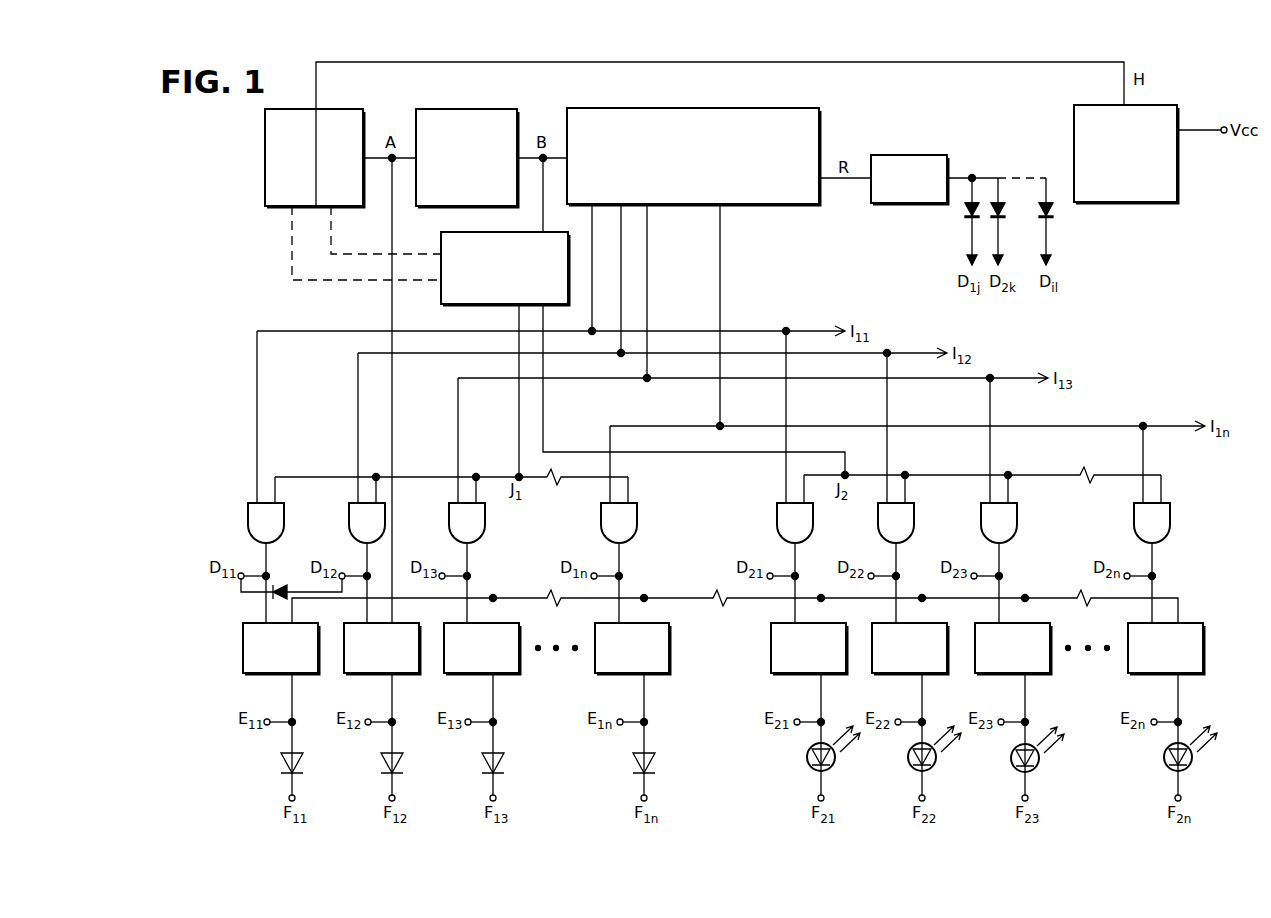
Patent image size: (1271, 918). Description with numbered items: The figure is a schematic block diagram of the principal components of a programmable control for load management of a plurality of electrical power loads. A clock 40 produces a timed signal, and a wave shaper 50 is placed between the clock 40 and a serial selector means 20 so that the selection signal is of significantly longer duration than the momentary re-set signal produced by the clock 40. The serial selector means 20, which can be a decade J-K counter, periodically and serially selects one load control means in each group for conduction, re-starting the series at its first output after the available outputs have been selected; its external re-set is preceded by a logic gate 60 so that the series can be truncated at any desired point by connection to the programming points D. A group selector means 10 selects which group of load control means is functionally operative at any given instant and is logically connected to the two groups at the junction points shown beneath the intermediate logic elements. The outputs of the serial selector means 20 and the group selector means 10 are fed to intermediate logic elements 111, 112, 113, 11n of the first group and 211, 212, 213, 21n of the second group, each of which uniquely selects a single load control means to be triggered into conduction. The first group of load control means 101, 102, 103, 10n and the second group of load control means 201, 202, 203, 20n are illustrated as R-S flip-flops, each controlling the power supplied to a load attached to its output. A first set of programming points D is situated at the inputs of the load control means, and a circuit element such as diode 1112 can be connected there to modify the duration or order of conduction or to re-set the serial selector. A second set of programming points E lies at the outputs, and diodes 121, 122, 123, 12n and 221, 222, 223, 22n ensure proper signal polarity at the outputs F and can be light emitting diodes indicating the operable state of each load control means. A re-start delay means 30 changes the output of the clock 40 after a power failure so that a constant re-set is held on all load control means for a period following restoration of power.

The group selector means 10 is at (445, 296).
The serial selector means 20 is at (796, 203).
The re-start delay means 30 is at (1145, 202).
The clock 40 is at (265, 196).
The wave shaper 50 is at (469, 108).
The logic gate 60 is at (913, 156).
The intermediate logic element 111 is at (248, 522).
The intermediate logic element 112 is at (349, 522).
The intermediate logic element 113 is at (449, 522).
The intermediate logic element 11n is at (601, 522).
The intermediate logic element 211 is at (777, 522).
The intermediate logic element 212 is at (878, 522).
The intermediate logic element 213 is at (981, 522).
The intermediate logic element 21n is at (1134, 522).
The load control means 101 is at (243, 673).
The load control means 102 is at (344, 673).
The load control means 103 is at (444, 673).
The load control means 10n is at (595, 673).
The load control means 201 is at (771, 673).
The load control means 202 is at (872, 673).
The load control means 203 is at (975, 673).
The load control means 20n is at (1128, 673).
The diode 121 is at (282, 765).
The diode 122 is at (382, 765).
The diode 123 is at (483, 765).
The diode 12n is at (633, 765).
The diode 221 is at (807, 760).
The diode 222 is at (908, 760).
The diode 223 is at (1011, 761).
The diode 22n is at (1164, 760).
The diode 1112 is at (281, 599).